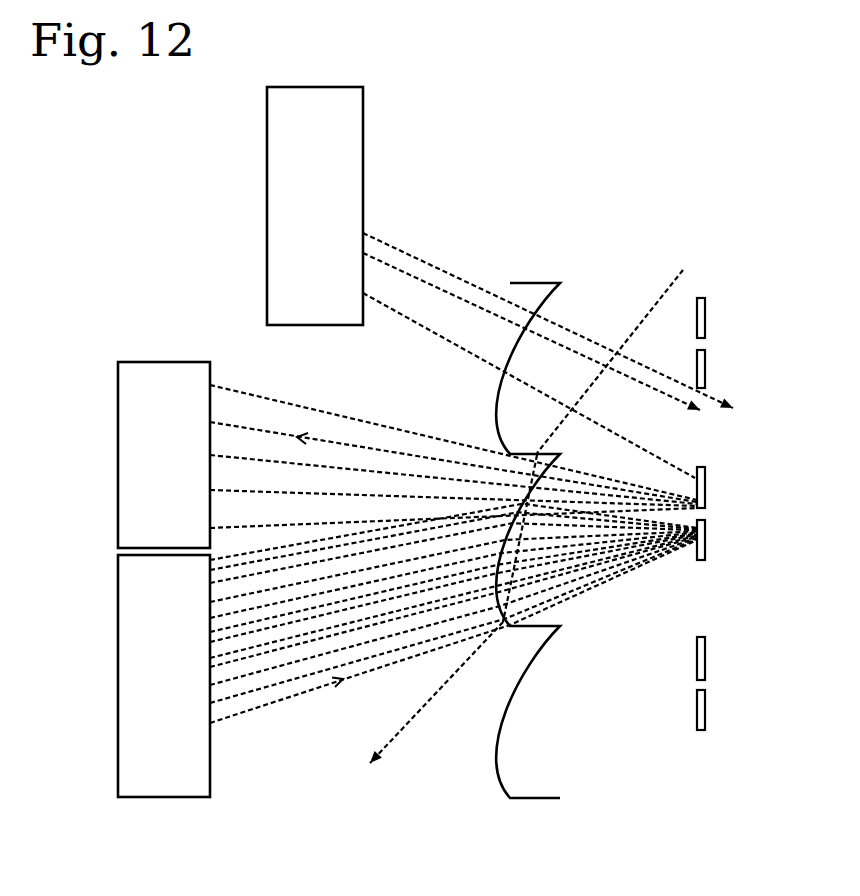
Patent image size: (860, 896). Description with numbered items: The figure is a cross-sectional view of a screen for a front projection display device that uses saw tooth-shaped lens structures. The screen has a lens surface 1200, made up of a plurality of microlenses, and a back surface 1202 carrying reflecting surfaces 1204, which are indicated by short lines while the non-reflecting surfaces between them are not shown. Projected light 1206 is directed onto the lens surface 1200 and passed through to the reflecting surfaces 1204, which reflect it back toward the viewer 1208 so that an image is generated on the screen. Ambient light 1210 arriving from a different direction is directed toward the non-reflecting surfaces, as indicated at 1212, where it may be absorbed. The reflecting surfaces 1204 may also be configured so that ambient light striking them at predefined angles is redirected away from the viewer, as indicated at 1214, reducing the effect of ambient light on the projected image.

The lens surface 1200 is at (460, 398).
The back surface 1202 is at (678, 311).
The reflecting surfaces 1204 is at (706, 484).
The projected light 1206 is at (302, 698).
The viewer 1208 is at (118, 383).
The ambient light 1210 is at (266, 110).
The ambient light directed to non-reflecting surfaces 1212 is at (708, 394).
The ambient light redirected away from the viewer 1214 is at (427, 706).